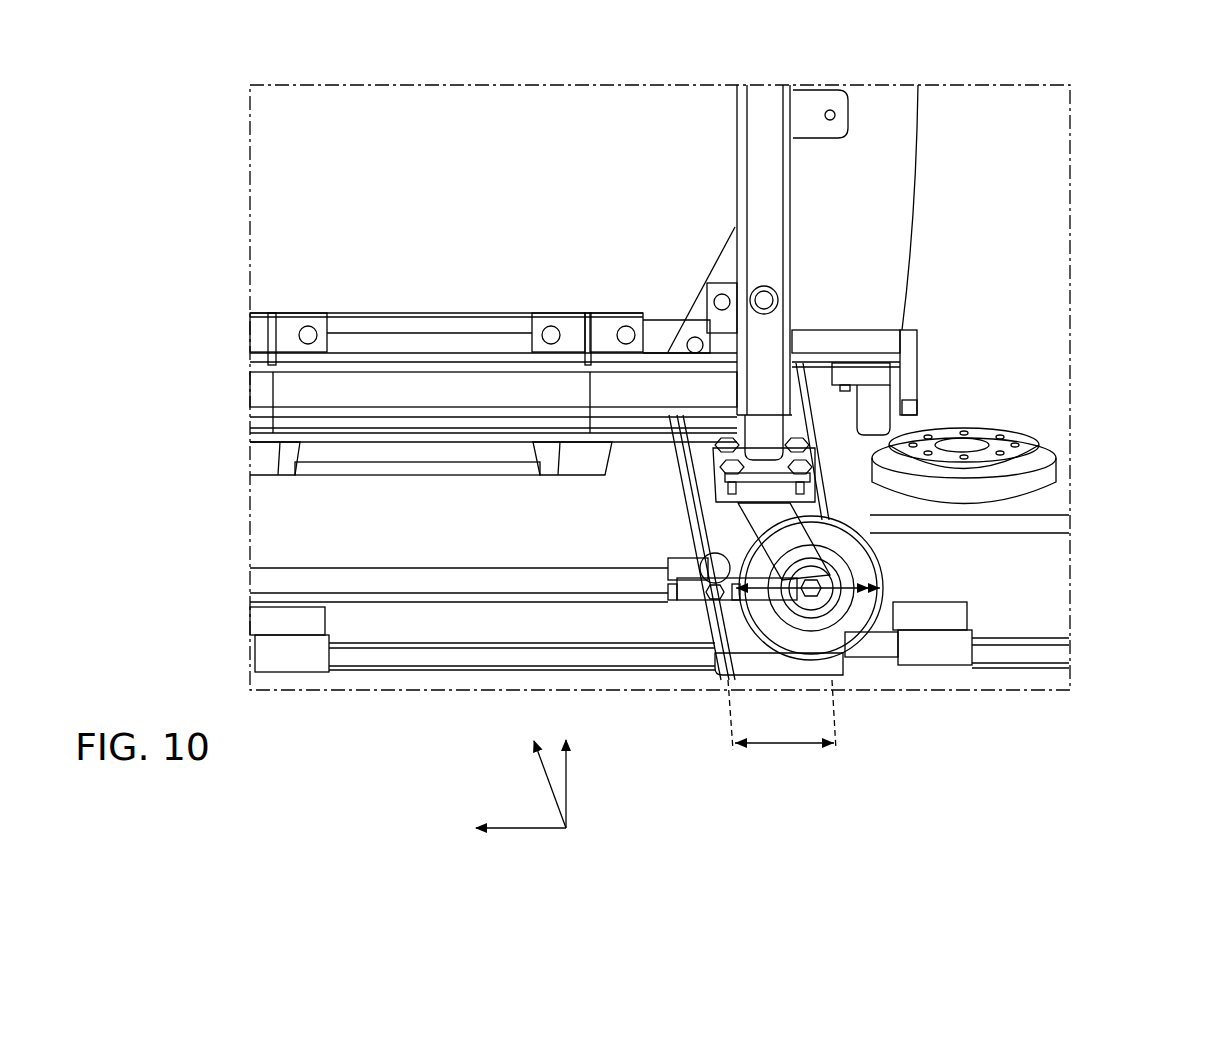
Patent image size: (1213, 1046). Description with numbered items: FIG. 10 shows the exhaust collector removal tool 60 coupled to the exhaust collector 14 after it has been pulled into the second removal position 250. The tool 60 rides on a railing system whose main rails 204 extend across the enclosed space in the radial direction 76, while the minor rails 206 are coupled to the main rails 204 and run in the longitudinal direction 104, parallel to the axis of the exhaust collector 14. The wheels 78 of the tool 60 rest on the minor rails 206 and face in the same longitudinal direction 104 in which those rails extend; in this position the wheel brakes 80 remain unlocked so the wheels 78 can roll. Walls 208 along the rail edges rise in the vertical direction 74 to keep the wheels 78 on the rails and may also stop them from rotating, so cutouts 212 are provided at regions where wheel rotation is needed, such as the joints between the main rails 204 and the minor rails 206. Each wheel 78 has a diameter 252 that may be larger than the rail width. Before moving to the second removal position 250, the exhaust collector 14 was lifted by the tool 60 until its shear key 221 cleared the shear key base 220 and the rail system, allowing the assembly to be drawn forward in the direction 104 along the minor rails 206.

The exhaust collector 14 is at (876, 125).
The tool 60 is at (765, 115).
The vertical direction 74 is at (568, 790).
The radial direction 76 is at (543, 770).
The wheels 78 is at (750, 625).
The wheel brakes 80 is at (690, 585).
The direction 104 is at (520, 830).
The main rails 204 is at (725, 525).
The minor rails 206 is at (873, 645).
The walls 208 is at (932, 645).
The cutouts 212 is at (802, 748).
The shear key base 220 is at (1040, 478).
The shear key 221 is at (878, 405).
The second removal position 250 is at (1128, 607).
The diameter 252 is at (860, 568).